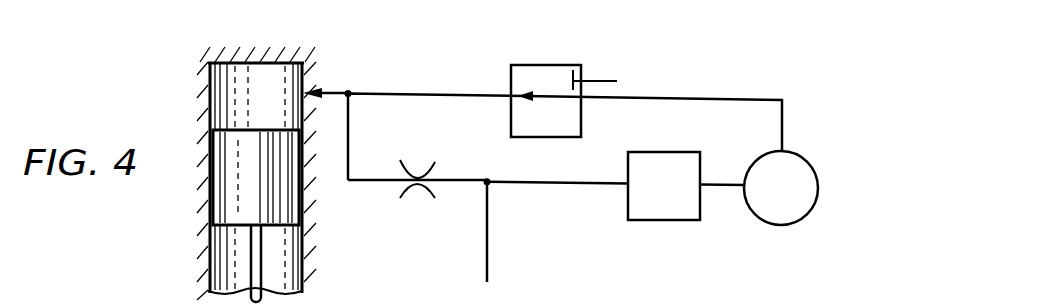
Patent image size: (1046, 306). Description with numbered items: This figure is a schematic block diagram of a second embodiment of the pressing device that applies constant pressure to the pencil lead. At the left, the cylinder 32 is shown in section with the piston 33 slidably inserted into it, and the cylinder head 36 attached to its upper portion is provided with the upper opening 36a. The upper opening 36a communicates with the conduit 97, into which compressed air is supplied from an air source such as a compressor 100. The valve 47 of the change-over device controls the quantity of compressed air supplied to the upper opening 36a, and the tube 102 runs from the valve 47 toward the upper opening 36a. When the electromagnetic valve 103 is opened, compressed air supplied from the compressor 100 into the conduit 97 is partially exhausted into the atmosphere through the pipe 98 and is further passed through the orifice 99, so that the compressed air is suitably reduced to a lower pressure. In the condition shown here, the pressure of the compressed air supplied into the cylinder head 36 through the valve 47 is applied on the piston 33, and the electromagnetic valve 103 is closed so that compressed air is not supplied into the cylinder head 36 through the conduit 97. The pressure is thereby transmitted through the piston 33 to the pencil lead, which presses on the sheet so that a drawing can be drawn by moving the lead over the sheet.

The cylinder 32 is at (209, 263).
The cylinder head 36 is at (250, 62).
The upper opening 36a is at (305, 85).
The piston 33 is at (282, 204).
The tube 102 is at (443, 93).
The valve 47 is at (543, 75).
The orifice 99 is at (413, 178).
The conduit 97 is at (596, 182).
The pipe 98 is at (489, 235).
The electromagnetic valve 103 is at (662, 221).
The compressor 100 is at (793, 152).